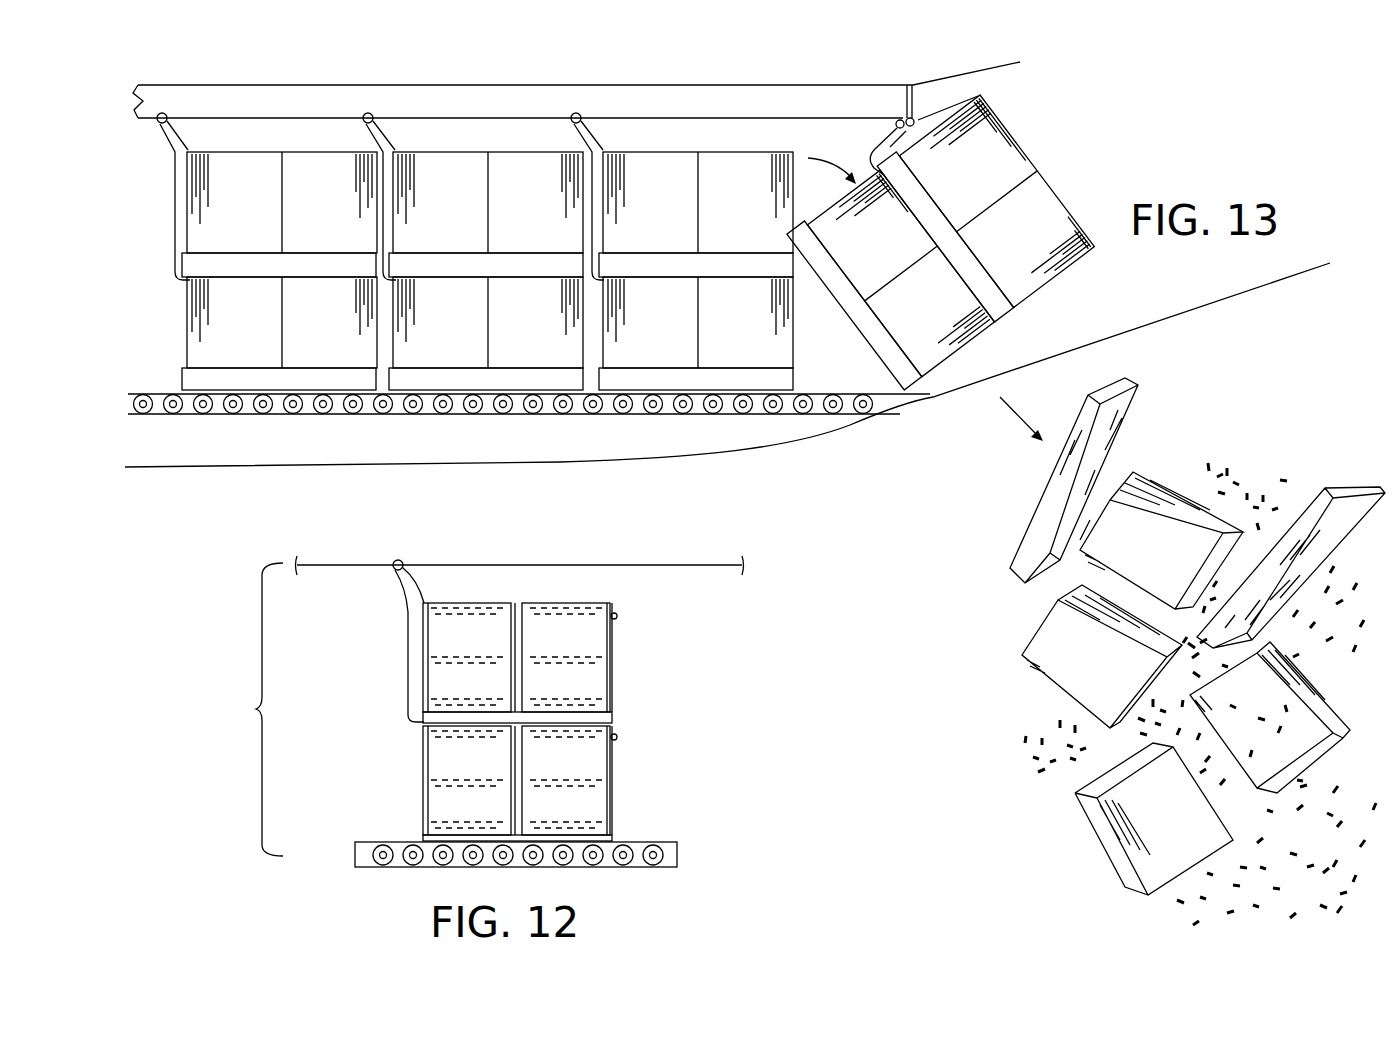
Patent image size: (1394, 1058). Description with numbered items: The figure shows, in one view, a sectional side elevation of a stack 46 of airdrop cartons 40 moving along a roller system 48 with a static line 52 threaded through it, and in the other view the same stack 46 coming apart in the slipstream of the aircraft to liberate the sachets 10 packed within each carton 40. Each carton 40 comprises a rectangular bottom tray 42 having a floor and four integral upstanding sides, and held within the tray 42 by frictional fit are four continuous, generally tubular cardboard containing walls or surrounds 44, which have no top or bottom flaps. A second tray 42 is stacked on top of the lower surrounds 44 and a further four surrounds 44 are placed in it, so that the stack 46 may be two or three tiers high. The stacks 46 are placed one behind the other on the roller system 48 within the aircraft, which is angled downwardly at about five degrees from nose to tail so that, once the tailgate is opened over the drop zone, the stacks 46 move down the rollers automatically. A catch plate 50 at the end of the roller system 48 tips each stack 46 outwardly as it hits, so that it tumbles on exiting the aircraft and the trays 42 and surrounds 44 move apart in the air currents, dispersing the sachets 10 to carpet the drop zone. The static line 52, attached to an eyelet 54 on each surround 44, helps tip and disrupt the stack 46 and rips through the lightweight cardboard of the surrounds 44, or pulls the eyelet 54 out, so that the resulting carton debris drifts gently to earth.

In FIG. 13, the sachet 10 is at (1256, 818).
In FIG. 13, the airdrop carton 40 is at (172, 331).
In FIG. 12, the airdrop carton 40 is at (388, 670).
In FIG. 13, the bottom tray 42 is at (185, 260).
In FIG. 12, the bottom tray 42 is at (408, 708).
In FIG. 13, the containing walls or surrounds 44 is at (210, 202).
In FIG. 12, the containing walls or surrounds 44 is at (423, 640).
In FIG. 12, the stack of cartons 46 is at (252, 709).
In FIG. 13, the roller system 48 is at (128, 398).
In FIG. 12, the roller system 48 is at (663, 856).
In FIG. 13, the catch plate 50 is at (950, 395).
In FIG. 13, the static line 52 is at (390, 139).
In FIG. 12, the static line 52 is at (428, 584).
In FIG. 12, the eyelet 54 is at (616, 617).